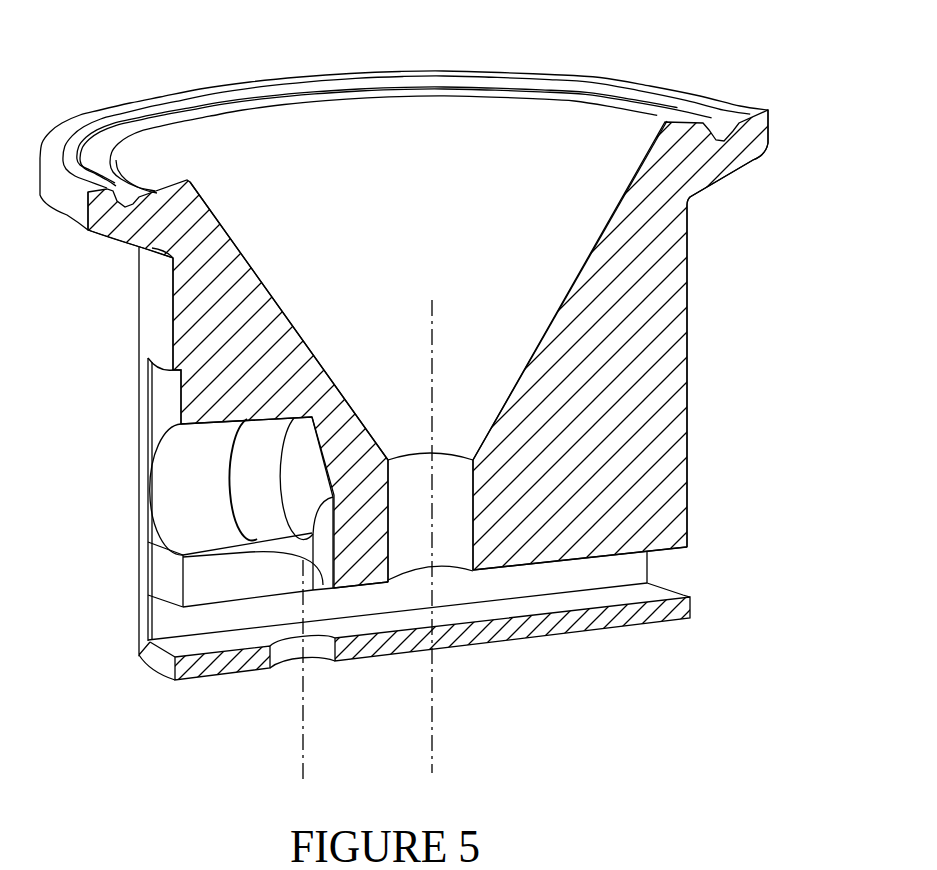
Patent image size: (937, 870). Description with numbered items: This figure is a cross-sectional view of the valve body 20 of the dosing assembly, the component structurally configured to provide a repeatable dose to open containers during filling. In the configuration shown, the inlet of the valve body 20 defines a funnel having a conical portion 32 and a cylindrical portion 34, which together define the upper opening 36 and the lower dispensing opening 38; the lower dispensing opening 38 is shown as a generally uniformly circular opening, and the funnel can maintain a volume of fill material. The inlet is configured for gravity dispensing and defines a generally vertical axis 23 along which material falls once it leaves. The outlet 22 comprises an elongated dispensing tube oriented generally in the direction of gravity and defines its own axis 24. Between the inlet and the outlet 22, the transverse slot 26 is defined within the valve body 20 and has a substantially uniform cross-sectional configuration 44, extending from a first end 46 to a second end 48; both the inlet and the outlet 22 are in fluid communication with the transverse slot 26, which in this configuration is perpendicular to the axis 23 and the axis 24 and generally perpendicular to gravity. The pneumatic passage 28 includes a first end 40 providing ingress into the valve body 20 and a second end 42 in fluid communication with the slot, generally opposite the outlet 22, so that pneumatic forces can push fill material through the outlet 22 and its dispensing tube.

The valve body 20 is at (106, 303).
The outlet 22 is at (271, 684).
The axis 23 is at (448, 747).
The axis 24 is at (290, 766).
The transverse slot 26 is at (690, 562).
The pneumatic passage 28 is at (106, 498).
The conical portion 32 is at (563, 147).
The cylindrical portion 34 is at (415, 487).
The upper opening 36 is at (421, 71).
The lower dispensing opening 38 is at (452, 577).
The first end 40 is at (153, 463).
The second end 42 is at (183, 556).
The cross-sectional configuration 44 is at (614, 596).
The first end 46 is at (690, 582).
The second end 48 is at (136, 617).